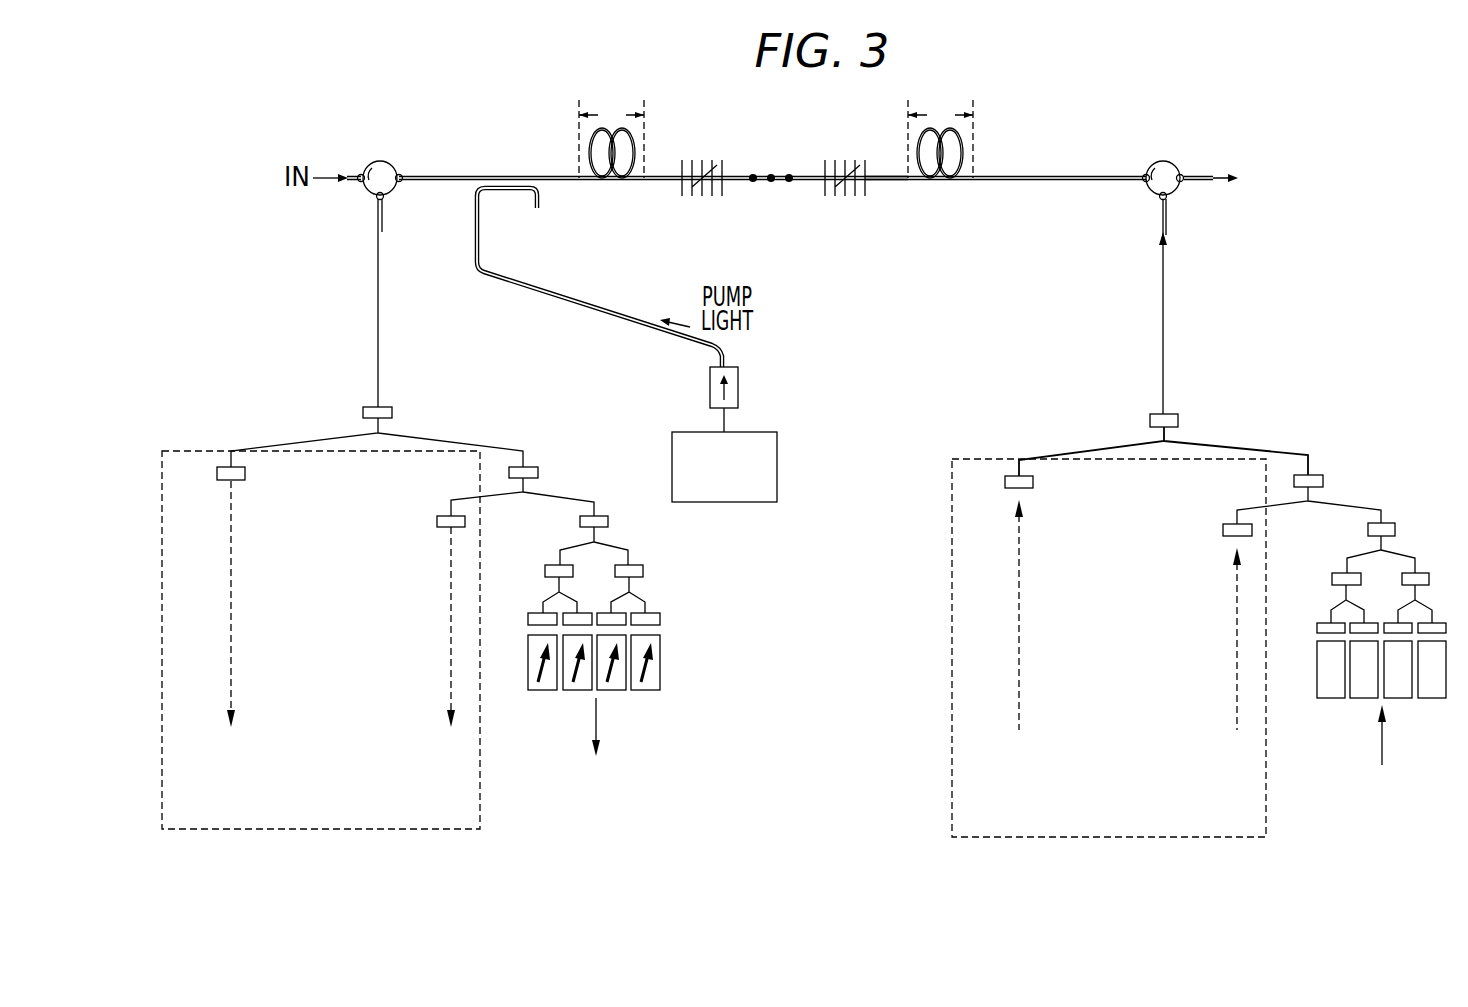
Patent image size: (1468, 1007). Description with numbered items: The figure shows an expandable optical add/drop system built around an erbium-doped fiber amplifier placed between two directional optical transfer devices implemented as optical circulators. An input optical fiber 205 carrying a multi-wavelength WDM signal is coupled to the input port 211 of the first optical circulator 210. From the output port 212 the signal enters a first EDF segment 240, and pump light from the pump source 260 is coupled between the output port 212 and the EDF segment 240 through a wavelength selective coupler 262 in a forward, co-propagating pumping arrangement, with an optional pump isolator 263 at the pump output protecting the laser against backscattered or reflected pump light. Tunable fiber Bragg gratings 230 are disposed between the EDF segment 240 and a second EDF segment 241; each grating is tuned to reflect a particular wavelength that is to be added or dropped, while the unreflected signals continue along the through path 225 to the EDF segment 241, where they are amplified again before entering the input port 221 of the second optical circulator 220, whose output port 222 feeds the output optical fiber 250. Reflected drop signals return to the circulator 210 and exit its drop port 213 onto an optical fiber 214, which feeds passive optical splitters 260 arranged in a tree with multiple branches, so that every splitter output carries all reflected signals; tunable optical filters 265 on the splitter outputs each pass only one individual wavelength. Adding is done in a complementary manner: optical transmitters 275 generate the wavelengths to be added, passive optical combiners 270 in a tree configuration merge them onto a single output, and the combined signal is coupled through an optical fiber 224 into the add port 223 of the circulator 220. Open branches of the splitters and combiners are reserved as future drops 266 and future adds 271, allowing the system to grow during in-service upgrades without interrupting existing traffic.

The input optical fiber 205 is at (356, 172).
The optical circulator 210 is at (373, 161).
The input port 211 is at (363, 183).
The output port 212 is at (401, 172).
The drop port 213 is at (384, 200).
The optical fiber 214 is at (376, 232).
The optical circulator 220 is at (1160, 160).
The input port 221 is at (1143, 172).
The output port 222 is at (1182, 172).
The add port 223 is at (1153, 203).
The optical fiber 224 is at (1167, 225).
The through path 225 is at (882, 173).
The tunable fiber Bragg gratings 230 is at (702, 160).
The EDF segment 240 is at (613, 165).
The EDF segment 241 is at (936, 162).
The output optical fiber 250 is at (1190, 181).
The passive optical splitters 260 is at (393, 412).
The wavelength selective coupler 262 is at (513, 191).
The pump isolator 263 is at (738, 387).
The tunable optical filters 265 is at (660, 670).
The future drops 266 is at (322, 830).
The passive optical combiners 270 is at (1178, 420).
The future adds 271 is at (1108, 838).
The optical transmitters 275 is at (1429, 699).